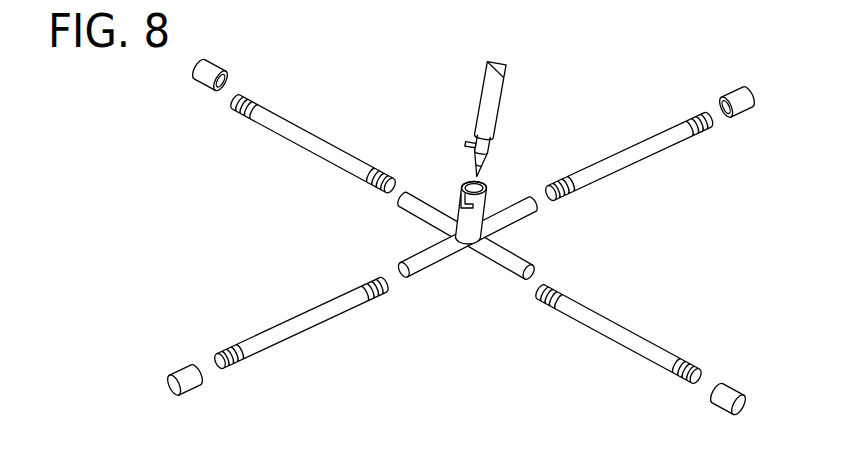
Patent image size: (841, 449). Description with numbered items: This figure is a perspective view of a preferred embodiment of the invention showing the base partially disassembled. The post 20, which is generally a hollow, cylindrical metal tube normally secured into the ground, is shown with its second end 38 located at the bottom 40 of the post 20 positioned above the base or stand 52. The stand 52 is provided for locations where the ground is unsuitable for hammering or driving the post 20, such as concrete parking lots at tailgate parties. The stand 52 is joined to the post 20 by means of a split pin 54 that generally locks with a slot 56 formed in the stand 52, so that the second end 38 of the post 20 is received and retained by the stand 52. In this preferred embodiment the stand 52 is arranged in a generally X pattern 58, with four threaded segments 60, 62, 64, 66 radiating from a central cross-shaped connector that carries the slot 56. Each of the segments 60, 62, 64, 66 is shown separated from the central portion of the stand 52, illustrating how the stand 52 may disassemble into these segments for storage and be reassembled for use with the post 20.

The post 20 is at (505, 97).
The second end 38 is at (477, 168).
The bottom 40 is at (498, 128).
The base or stand 52 is at (438, 252).
The split pin 54 is at (490, 157).
The slot 56 is at (461, 198).
The X pattern 58 is at (134, 156).
The segment 60 is at (597, 320).
The segment 62 is at (312, 310).
The segment 64 is at (303, 133).
The segment 66 is at (615, 162).